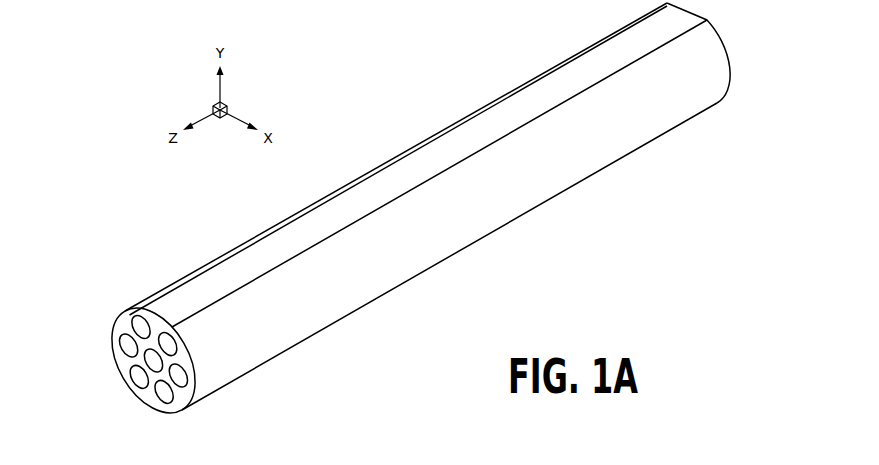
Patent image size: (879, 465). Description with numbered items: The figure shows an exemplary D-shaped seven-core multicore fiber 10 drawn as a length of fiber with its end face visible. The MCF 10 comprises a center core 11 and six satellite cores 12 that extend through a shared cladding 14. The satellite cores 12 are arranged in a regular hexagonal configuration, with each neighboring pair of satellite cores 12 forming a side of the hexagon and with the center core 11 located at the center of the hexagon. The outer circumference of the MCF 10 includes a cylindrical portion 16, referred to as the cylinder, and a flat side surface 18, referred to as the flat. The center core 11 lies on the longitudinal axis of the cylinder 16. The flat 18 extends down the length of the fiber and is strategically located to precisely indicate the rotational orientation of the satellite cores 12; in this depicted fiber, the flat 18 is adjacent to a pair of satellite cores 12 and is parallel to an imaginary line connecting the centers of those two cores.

The D-shaped 7-core multicore fiber 10 is at (442, 44).
The center core 11 is at (153, 357).
The satellite cores 12 is at (136, 331).
The shared cladding 14 is at (153, 403).
The cylindrical portion 16 is at (442, 230).
The flat side surface 18 is at (510, 130).